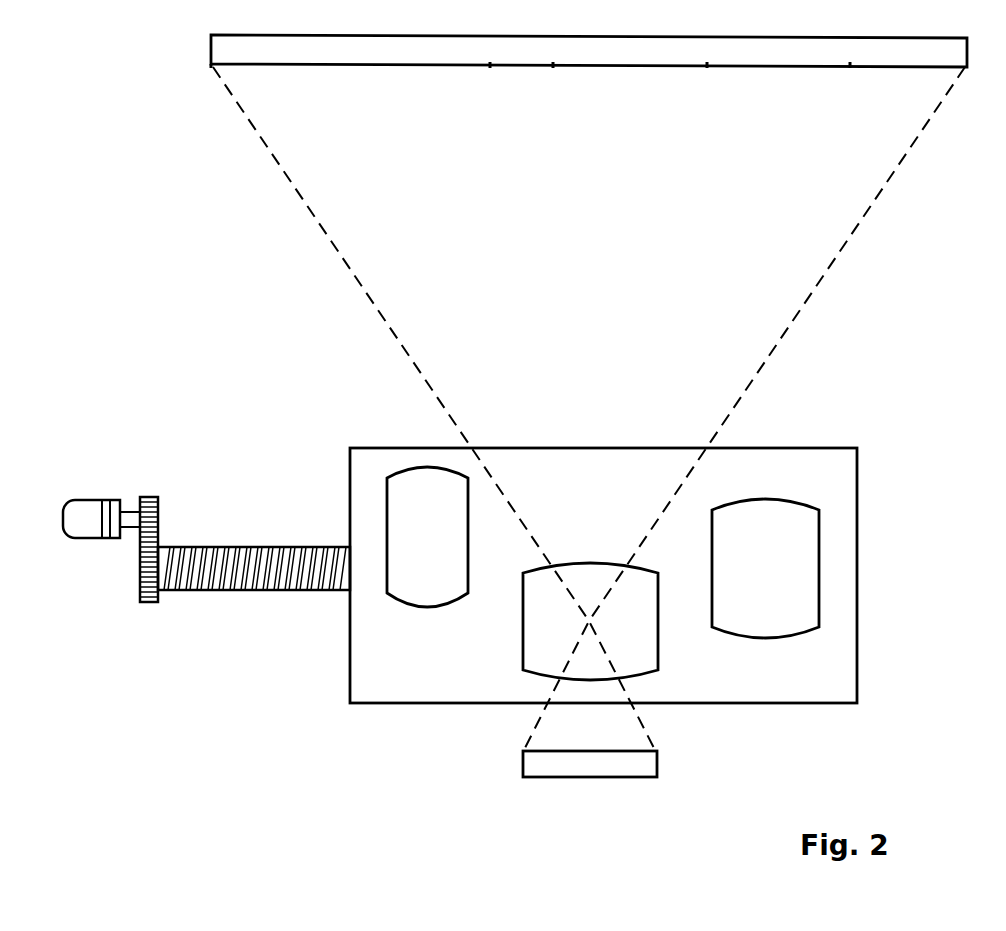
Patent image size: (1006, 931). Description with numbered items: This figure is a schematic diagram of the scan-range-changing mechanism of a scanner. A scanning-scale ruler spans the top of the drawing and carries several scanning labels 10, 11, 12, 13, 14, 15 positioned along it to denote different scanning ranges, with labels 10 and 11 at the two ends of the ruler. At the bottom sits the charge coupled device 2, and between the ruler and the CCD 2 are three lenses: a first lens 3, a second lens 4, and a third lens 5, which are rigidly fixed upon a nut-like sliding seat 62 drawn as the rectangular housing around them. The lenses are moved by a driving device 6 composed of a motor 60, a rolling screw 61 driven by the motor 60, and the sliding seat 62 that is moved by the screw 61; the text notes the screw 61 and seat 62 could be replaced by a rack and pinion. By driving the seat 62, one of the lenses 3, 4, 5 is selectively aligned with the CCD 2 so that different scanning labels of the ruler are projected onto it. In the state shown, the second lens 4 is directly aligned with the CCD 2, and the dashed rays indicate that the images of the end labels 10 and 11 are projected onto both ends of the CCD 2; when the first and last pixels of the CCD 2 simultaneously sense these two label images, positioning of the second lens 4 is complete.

The charge coupled device 2 is at (608, 770).
The first lens 3 is at (392, 498).
The second lens 4 is at (585, 580).
The third lens 5 is at (777, 515).
The driving device 6 is at (206, 559).
The scanning label 10 is at (965, 67).
The scanning label 11 is at (213, 67).
The scanning label 12 is at (490, 65).
The scanning label 13 is at (553, 65).
The scanning label 14 is at (707, 65).
The scanning label 15 is at (850, 67).
The motor 60 is at (87, 507).
The rolling screw 61 is at (223, 587).
The sliding seat 62 is at (357, 637).